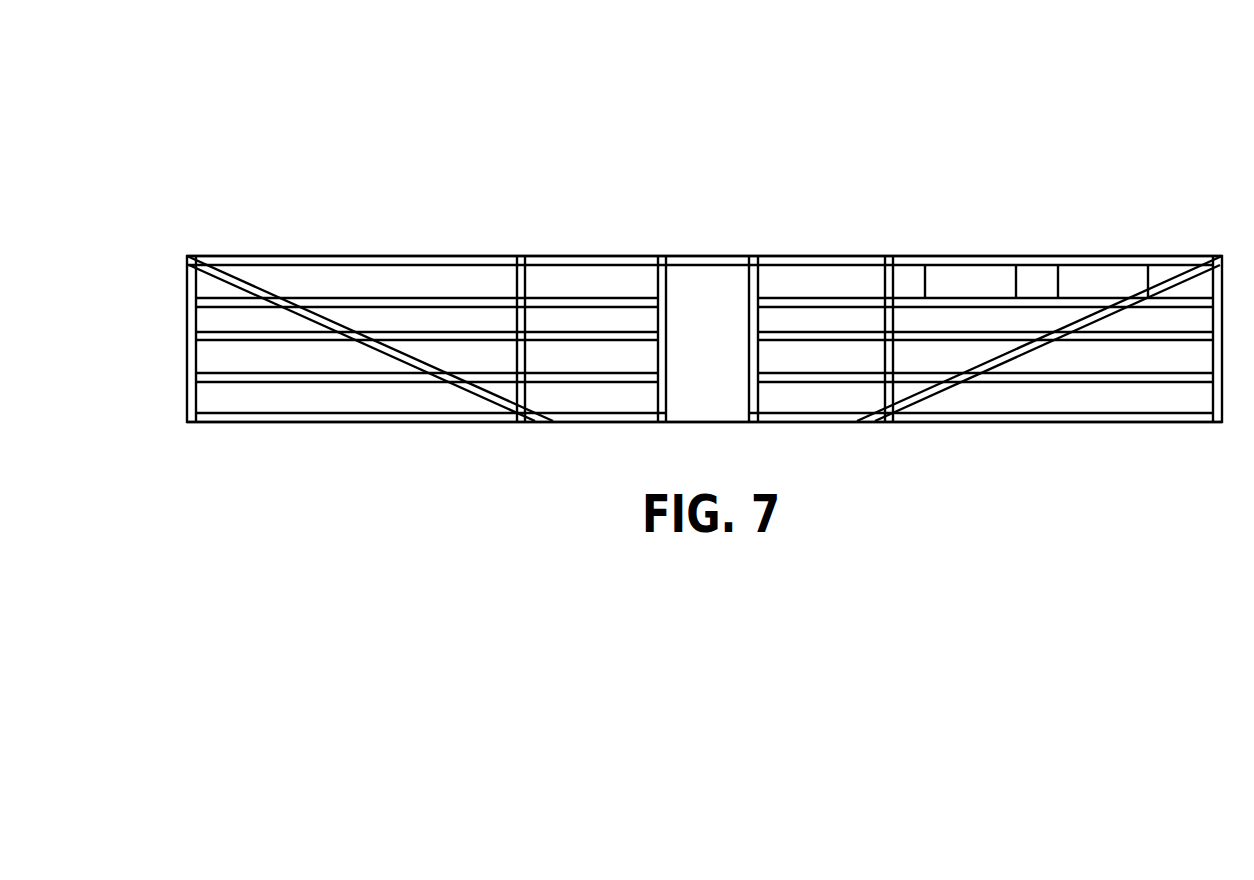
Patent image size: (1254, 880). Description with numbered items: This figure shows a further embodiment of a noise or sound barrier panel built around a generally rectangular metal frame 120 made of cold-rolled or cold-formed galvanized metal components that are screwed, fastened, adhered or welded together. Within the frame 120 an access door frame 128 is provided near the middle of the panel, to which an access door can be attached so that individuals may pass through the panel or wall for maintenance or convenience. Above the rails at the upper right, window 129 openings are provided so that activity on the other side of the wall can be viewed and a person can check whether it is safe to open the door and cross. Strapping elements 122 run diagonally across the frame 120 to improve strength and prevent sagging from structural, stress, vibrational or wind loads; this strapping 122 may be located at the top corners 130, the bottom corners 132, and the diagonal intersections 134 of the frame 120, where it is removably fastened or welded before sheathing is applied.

The metal frame 120 is at (840, 141).
The strapping elements 122 is at (392, 352).
The access door frame 128 is at (713, 254).
The window 129 is at (953, 276).
The top corners 130 is at (186, 253).
The bottom corners 132 is at (187, 425).
The diagonal intersections 134 is at (518, 425).